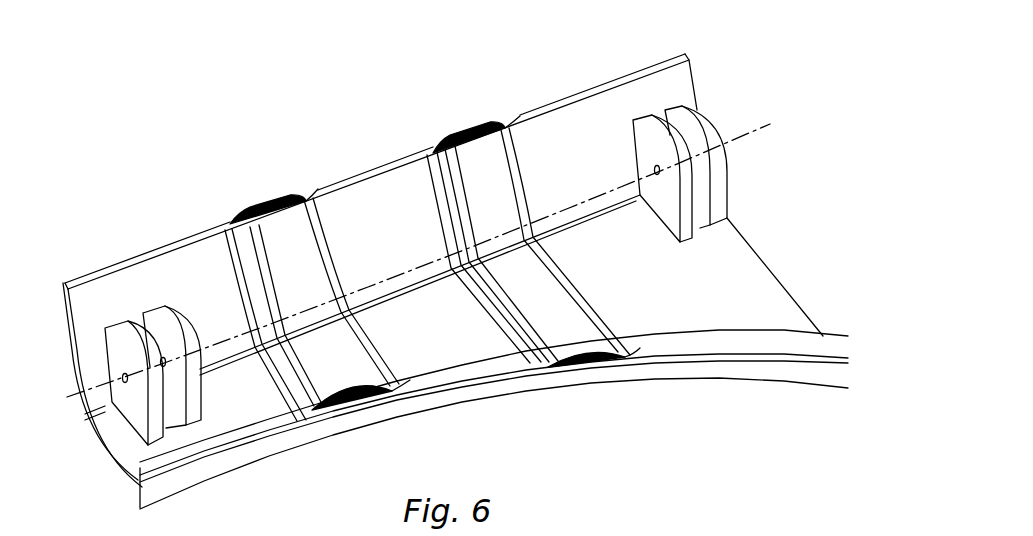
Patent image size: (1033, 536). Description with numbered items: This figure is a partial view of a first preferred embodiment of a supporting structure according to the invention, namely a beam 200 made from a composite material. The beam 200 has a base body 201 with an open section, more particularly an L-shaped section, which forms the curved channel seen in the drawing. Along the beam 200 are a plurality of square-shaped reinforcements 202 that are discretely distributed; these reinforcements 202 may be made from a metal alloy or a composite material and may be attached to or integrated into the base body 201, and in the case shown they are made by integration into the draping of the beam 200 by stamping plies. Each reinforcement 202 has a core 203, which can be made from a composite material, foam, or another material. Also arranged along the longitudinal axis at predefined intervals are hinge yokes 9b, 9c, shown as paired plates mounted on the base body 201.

The beam 200 is at (447, 254).
The base body 201 is at (391, 251).
The square-shaped reinforcement 202 is at (328, 360).
The core 203 is at (277, 210).
The hinge yoke 9b is at (124, 330).
The hinge yoke 9c is at (688, 116).